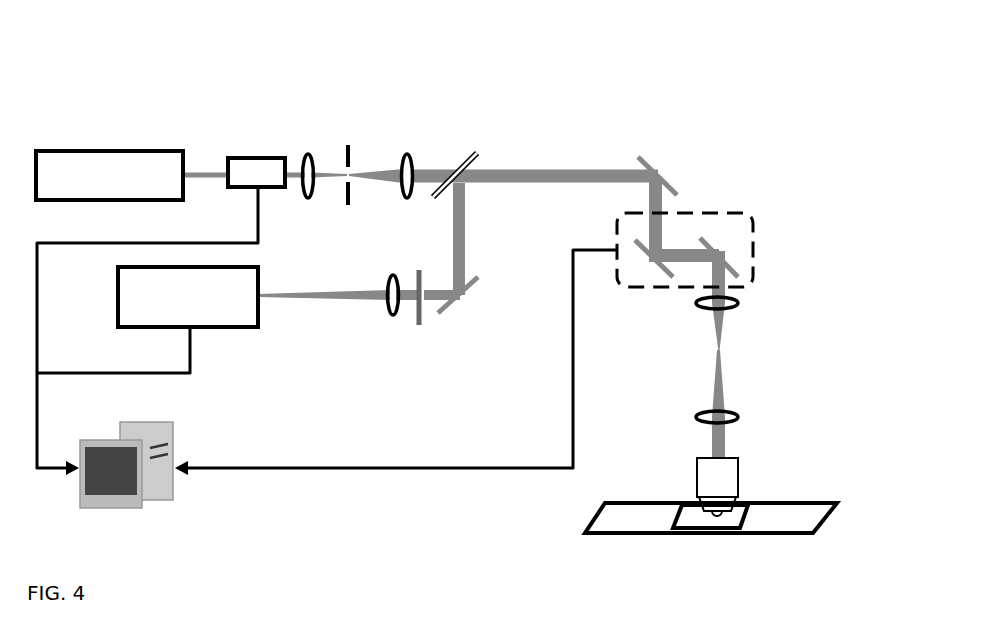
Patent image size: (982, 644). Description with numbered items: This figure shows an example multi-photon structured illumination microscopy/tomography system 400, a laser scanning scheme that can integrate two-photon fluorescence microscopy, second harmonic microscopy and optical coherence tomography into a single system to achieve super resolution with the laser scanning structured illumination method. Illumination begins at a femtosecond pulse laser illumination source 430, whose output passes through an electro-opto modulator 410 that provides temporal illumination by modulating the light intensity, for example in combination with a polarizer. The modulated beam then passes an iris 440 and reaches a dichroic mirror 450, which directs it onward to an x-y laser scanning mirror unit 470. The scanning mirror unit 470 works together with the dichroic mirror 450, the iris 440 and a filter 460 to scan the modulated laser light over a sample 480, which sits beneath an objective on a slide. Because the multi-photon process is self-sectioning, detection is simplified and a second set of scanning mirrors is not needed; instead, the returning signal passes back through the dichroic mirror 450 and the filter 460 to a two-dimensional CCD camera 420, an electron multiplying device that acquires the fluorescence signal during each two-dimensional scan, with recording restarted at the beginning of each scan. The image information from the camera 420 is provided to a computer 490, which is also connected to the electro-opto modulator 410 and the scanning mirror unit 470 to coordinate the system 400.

The multi-photon structured illumination microscopy/tomography system 400 is at (172, 79).
The electro-opto modulator 410 is at (256, 143).
The 2D CCD camera 420 is at (188, 326).
The pulse laser illumination source 430 is at (109, 143).
The iris 440 is at (373, 182).
The dichroic mirror 450 is at (445, 142).
The filter 460 is at (438, 320).
The x-y laser scanning mirror unit 470 is at (752, 297).
The sample 480 is at (711, 539).
The computer 490 is at (139, 483).